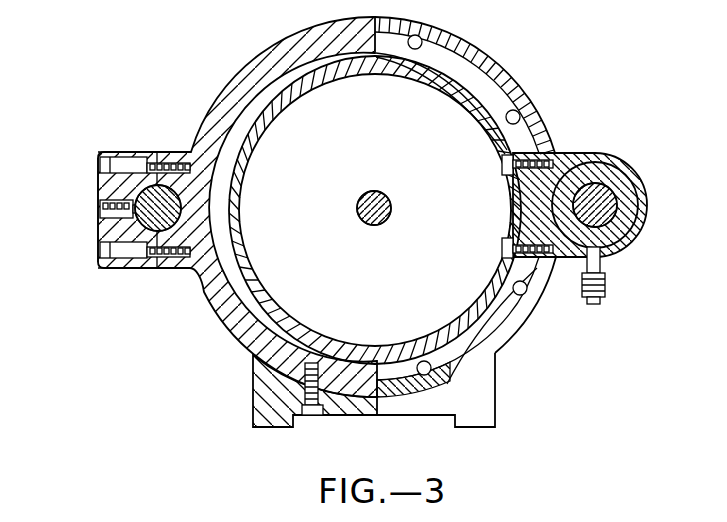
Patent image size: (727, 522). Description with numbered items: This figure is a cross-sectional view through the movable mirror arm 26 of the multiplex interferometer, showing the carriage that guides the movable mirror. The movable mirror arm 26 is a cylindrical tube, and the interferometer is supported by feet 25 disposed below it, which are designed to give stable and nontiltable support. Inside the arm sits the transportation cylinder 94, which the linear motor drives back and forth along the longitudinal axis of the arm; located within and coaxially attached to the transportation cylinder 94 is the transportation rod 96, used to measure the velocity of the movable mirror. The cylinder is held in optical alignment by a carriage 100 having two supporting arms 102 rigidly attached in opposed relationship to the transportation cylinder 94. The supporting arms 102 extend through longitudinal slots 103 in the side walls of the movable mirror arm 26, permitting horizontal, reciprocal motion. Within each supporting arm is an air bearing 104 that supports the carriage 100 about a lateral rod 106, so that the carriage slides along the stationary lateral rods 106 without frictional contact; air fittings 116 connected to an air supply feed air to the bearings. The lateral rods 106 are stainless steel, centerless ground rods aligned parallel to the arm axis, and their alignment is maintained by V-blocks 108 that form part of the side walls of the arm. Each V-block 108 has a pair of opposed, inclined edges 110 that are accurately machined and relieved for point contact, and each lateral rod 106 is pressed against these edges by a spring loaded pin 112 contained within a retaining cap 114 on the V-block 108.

The feet 25 is at (257, 418).
The movable mirror arm 26 is at (243, 55).
The transportation cylinder 94 is at (430, 338).
The transportation rod 96 is at (391, 204).
The carriage 100 is at (604, 210).
The supporting arms 102 is at (593, 153).
The longitudinal slots 103 is at (555, 150).
The air bearing 104 is at (623, 200).
The lateral rods 106 is at (140, 225).
The V-blocks 108 is at (177, 152).
The inclined edges 110 is at (160, 228).
The spring loaded pin 112 is at (100, 213).
The retaining cap 114 is at (108, 190).
The air fittings 116 is at (601, 290).